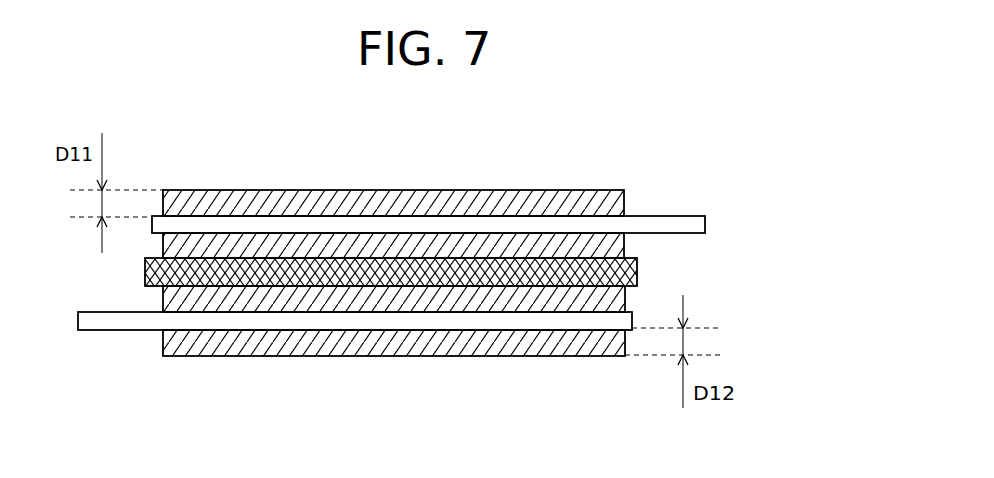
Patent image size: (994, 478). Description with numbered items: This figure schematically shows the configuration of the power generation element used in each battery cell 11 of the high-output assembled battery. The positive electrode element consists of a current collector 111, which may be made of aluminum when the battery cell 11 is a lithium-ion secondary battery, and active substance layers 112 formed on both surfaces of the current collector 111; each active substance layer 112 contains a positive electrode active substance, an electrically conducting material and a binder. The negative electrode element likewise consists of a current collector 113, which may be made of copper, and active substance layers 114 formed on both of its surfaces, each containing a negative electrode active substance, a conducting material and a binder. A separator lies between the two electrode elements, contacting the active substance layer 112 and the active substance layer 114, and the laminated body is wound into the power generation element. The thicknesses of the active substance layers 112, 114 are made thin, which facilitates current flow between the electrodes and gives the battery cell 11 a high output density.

The battery cell 11 is at (743, 148).
The current collector 111 is at (666, 224).
The active substance layer 112 is at (372, 241).
The current collector 113 is at (637, 270).
The active substance layer 114 is at (455, 306).